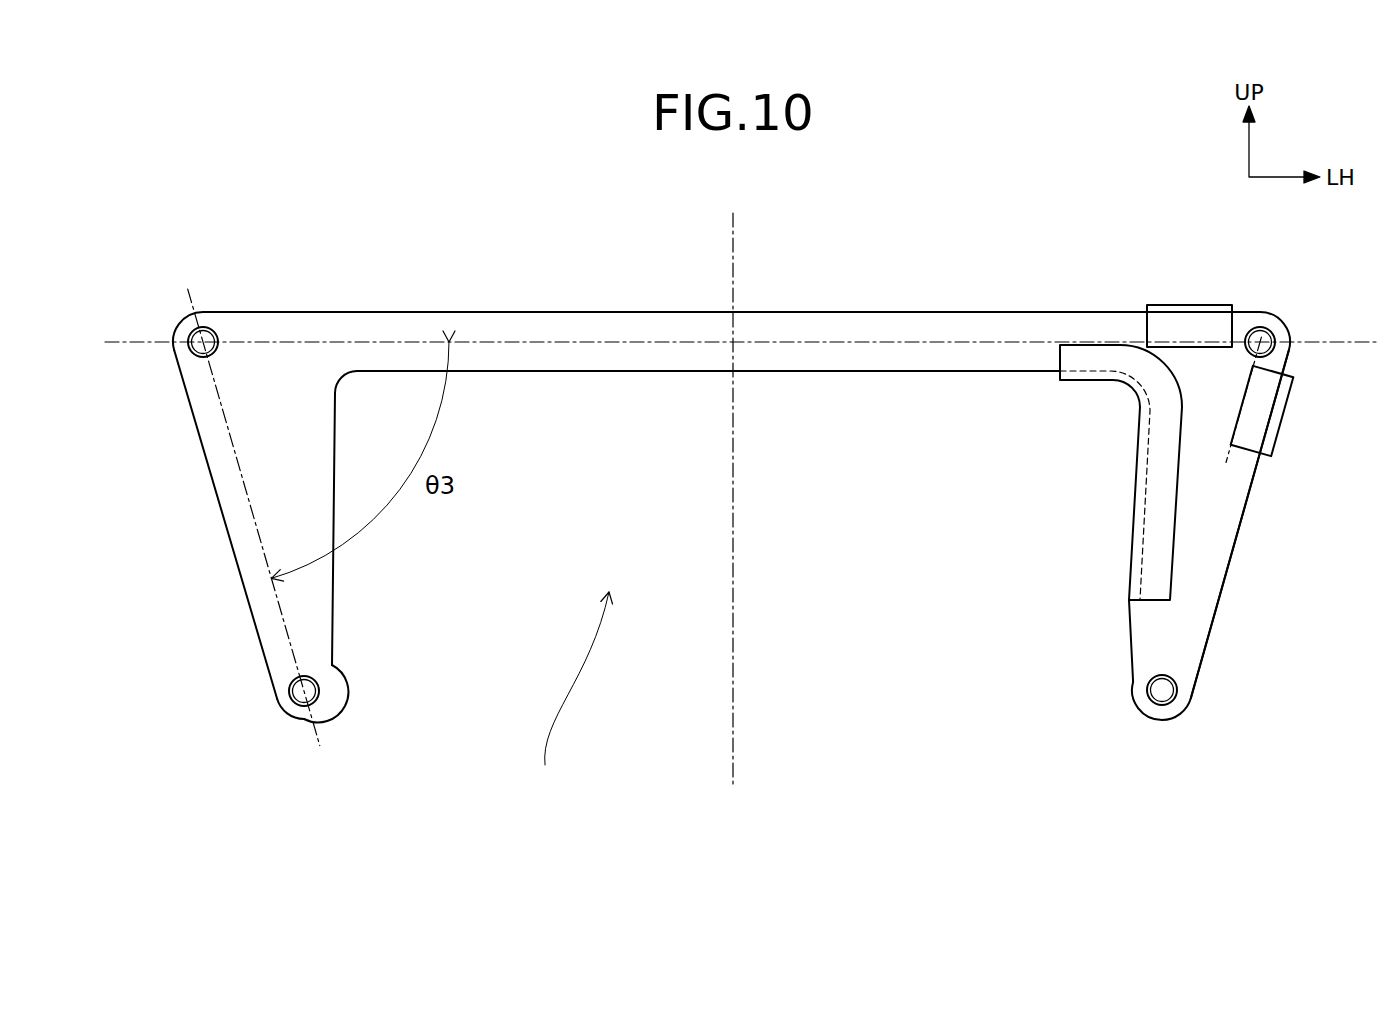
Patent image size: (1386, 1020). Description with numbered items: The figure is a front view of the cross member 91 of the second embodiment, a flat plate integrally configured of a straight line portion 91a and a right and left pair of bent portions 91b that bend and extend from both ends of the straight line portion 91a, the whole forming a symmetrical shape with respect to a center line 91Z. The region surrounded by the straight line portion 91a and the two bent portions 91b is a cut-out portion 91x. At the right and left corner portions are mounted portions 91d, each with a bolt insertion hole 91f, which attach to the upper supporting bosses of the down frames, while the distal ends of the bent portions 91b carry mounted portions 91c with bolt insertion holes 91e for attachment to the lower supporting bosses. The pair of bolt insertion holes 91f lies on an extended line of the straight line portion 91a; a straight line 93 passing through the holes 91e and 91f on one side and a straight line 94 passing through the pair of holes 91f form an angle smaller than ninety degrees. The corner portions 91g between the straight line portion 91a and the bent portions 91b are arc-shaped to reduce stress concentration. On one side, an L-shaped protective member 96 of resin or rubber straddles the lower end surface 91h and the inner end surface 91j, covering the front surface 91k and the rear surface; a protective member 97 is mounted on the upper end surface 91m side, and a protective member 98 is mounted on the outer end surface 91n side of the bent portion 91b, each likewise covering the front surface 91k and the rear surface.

The cross member 91 is at (527, 266).
The straight line portion 91a is at (650, 324).
The bent portions 91b is at (225, 533).
The mounted portions 91c is at (298, 712).
The mounted portions 91d is at (190, 320).
The bolt insertion holes 91e is at (289, 697).
The bolt insertion holes 91f is at (190, 350).
The corner portions 91g is at (328, 383).
The lower end surface 91h is at (990, 373).
The inner end surface 91j is at (1133, 621).
The front surface 91k is at (1205, 565).
The upper end surface 91m is at (1110, 311).
The outer end surface 91n is at (1253, 477).
The cut-out portion 91x is at (566, 693).
The center line 91Z is at (738, 576).
The straight line 93 is at (228, 445).
The straight line 94 is at (862, 340).
The protective member 96 is at (1157, 488).
The protective member 97 is at (1195, 330).
The protective member 98 is at (1258, 407).